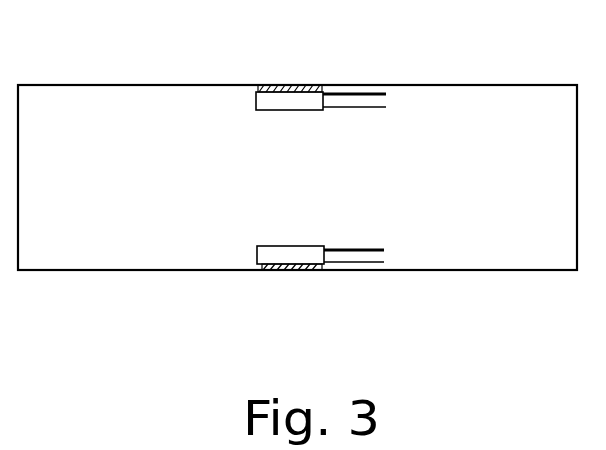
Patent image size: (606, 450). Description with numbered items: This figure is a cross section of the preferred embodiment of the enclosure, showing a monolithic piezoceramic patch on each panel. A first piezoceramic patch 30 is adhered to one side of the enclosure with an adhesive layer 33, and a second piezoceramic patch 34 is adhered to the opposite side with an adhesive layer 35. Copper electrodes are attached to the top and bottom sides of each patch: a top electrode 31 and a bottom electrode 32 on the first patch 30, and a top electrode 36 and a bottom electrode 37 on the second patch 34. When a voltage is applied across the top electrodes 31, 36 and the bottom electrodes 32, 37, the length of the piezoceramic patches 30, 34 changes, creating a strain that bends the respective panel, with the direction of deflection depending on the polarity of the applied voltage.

The piezoceramic patch 30 is at (273, 105).
The top electrode 31 is at (363, 92).
The bottom electrode 32 is at (365, 110).
The adhesive layer 33 is at (270, 85).
The piezoceramic patch 34 is at (262, 251).
The adhesive layer 35 is at (270, 270).
The top electrode 36 is at (357, 250).
The bottom electrode 37 is at (358, 270).